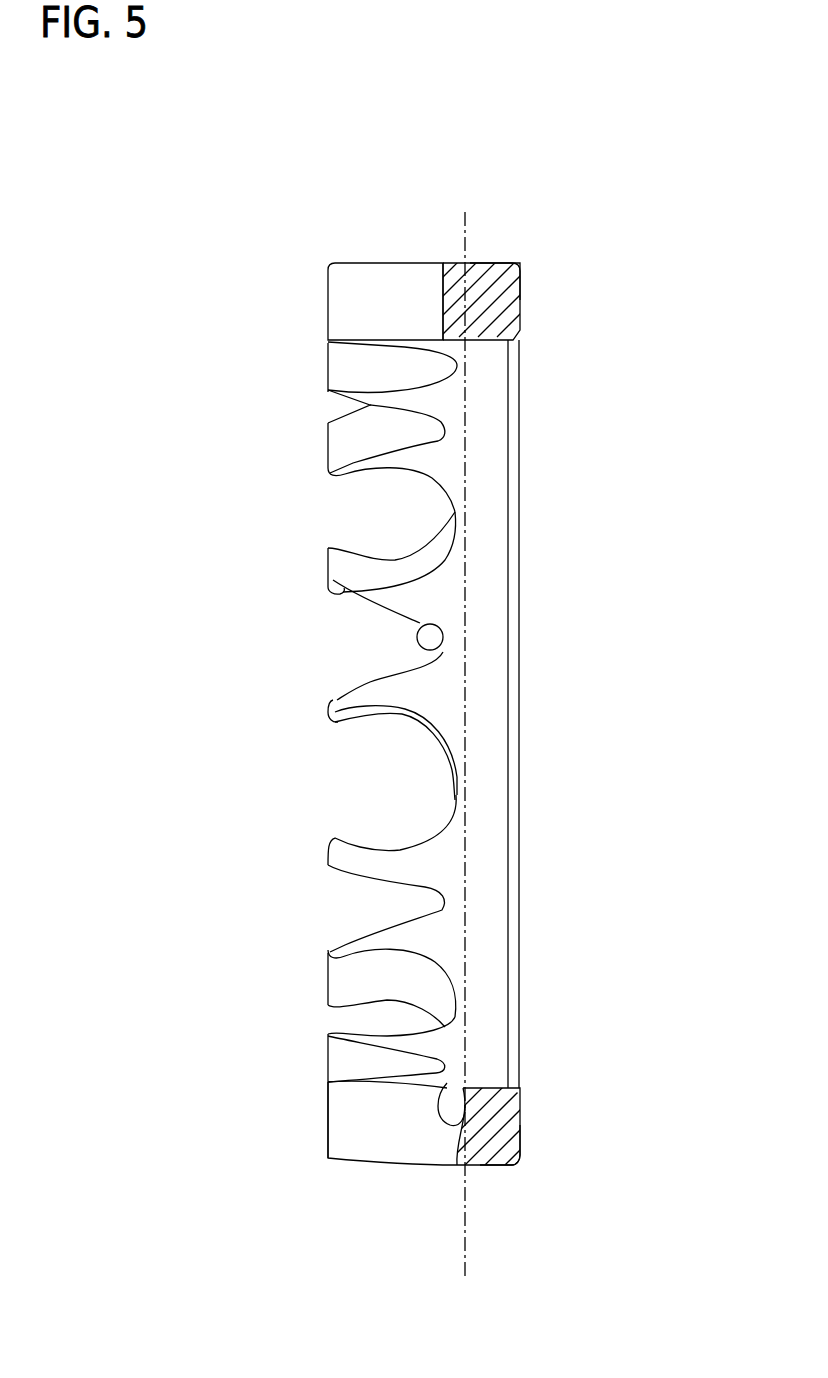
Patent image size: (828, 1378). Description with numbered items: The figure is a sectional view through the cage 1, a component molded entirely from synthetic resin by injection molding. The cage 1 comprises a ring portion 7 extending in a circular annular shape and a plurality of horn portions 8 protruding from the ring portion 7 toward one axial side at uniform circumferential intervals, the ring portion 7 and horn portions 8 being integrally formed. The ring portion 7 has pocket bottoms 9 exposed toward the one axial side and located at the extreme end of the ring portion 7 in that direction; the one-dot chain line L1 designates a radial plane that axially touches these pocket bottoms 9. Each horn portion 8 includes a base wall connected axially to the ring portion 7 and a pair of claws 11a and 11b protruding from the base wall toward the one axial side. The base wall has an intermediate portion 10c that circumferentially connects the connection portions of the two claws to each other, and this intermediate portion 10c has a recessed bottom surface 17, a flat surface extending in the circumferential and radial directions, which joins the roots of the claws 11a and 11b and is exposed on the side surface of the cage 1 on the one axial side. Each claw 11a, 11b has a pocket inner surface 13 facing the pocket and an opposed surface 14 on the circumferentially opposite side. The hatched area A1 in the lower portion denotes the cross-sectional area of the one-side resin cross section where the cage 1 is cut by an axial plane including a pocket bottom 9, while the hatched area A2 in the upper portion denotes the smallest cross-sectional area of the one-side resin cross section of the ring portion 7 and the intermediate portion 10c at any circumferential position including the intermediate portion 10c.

The cage 1 is at (593, 308).
The ring portion 7 is at (497, 301).
The horn portion 8 is at (363, 610).
The pocket bottom 9 is at (445, 1088).
The intermediate portion 10c is at (455, 275).
The claw 11a is at (340, 706).
The claw 11b is at (328, 313).
The pocket inner surface 13 is at (377, 1123).
The opposed surface 14 is at (355, 293).
The recessed bottom surface 17 is at (443, 302).
The cross-sectional area A1 is at (497, 1143).
The smallest cross-sectional area A2 is at (492, 278).
The radial plane L1 is at (467, 768).